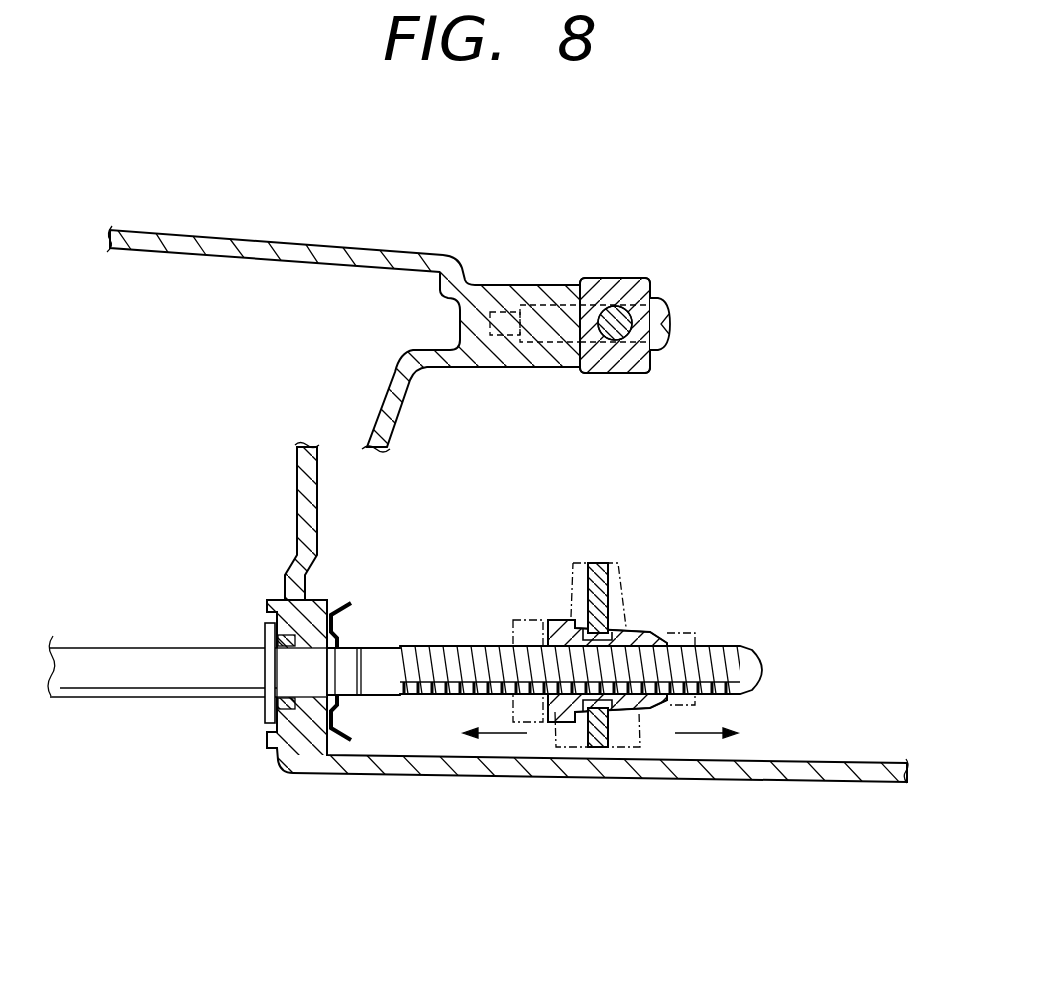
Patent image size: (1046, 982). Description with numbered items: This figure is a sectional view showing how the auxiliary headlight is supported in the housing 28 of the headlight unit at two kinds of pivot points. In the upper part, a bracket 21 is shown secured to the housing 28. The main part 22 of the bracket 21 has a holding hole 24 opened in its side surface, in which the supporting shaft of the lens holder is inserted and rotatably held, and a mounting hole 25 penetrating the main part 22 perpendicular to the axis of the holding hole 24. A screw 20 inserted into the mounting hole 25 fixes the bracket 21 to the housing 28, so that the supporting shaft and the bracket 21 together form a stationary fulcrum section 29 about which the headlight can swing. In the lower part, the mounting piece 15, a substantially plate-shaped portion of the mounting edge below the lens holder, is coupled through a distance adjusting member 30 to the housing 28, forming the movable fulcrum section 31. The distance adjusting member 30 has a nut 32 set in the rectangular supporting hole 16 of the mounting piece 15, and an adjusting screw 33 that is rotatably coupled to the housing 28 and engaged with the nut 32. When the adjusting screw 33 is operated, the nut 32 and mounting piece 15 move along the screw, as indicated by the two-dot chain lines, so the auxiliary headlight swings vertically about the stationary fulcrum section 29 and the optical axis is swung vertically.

The mounting piece 15 is at (603, 582).
The supporting hole 16 is at (633, 630).
The screw 20 is at (672, 337).
The bracket 21 is at (620, 278).
The main part 22 is at (637, 360).
The holding hole 24 is at (652, 298).
The mounting hole 25 is at (570, 367).
The housing 28 is at (333, 246).
The stationary fulcrum section 29 is at (667, 254).
The distance adjusting member 30 is at (472, 640).
The movable fulcrum section 31 is at (399, 805).
The nut 32 is at (647, 627).
The adjusting screw 33 is at (437, 648).